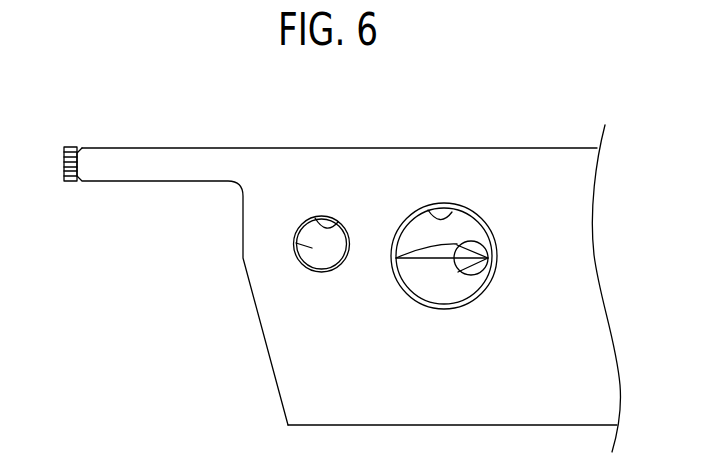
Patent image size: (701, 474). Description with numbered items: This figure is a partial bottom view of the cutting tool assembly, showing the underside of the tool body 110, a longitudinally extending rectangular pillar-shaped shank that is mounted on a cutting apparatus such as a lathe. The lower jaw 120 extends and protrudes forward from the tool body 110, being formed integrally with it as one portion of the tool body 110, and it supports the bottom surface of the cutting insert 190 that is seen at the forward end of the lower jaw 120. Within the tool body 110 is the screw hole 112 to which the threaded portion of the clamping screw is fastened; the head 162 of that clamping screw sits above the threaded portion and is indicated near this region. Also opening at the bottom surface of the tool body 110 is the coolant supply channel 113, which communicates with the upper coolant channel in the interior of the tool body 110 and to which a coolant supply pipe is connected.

The tool body 110 is at (535, 163).
The lower jaw 120 is at (139, 162).
The cutting insert 190 is at (66, 163).
The screw hole 112 is at (338, 222).
The coolant supply channel 113 is at (452, 212).
The head 162 is at (312, 248).